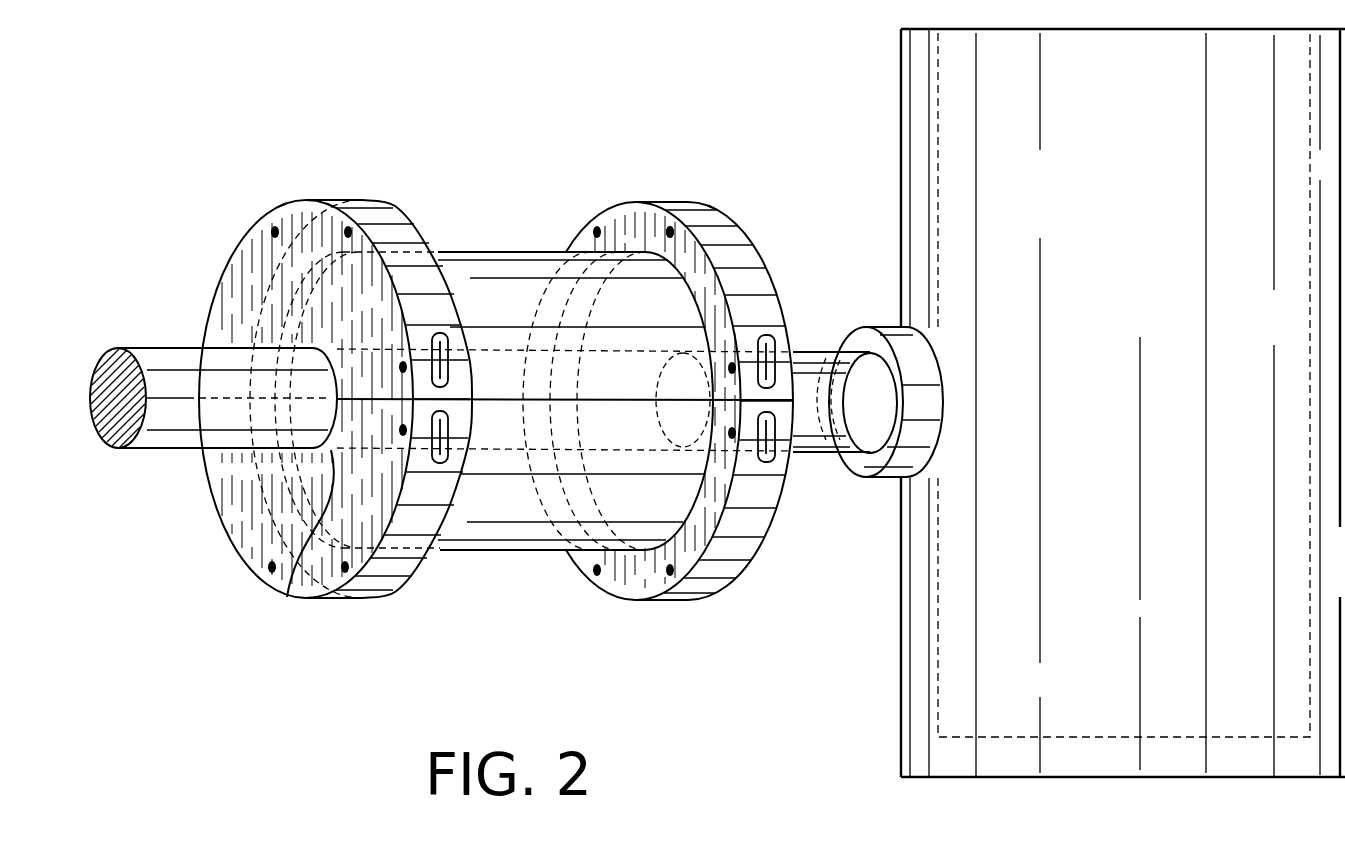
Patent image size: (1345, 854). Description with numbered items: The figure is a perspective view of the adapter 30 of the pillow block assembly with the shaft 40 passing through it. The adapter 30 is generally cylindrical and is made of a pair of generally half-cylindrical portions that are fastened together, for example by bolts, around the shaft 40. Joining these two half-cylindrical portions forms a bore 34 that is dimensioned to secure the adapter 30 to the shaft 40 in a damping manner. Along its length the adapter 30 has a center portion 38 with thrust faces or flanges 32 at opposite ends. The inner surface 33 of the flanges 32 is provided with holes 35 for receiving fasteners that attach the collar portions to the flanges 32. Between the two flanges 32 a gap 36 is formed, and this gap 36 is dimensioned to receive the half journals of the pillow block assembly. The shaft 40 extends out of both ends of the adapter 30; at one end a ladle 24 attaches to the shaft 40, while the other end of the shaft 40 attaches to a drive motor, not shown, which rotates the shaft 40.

The ladle 24 is at (901, 95).
The adapter 30 is at (537, 153).
The flanges 32 is at (410, 235).
The inner surface 33 is at (618, 582).
The bore 34 is at (287, 597).
The holes 35 is at (686, 240).
The gap 36 is at (638, 607).
The center portion 38 is at (503, 293).
The shaft 40 is at (158, 353).